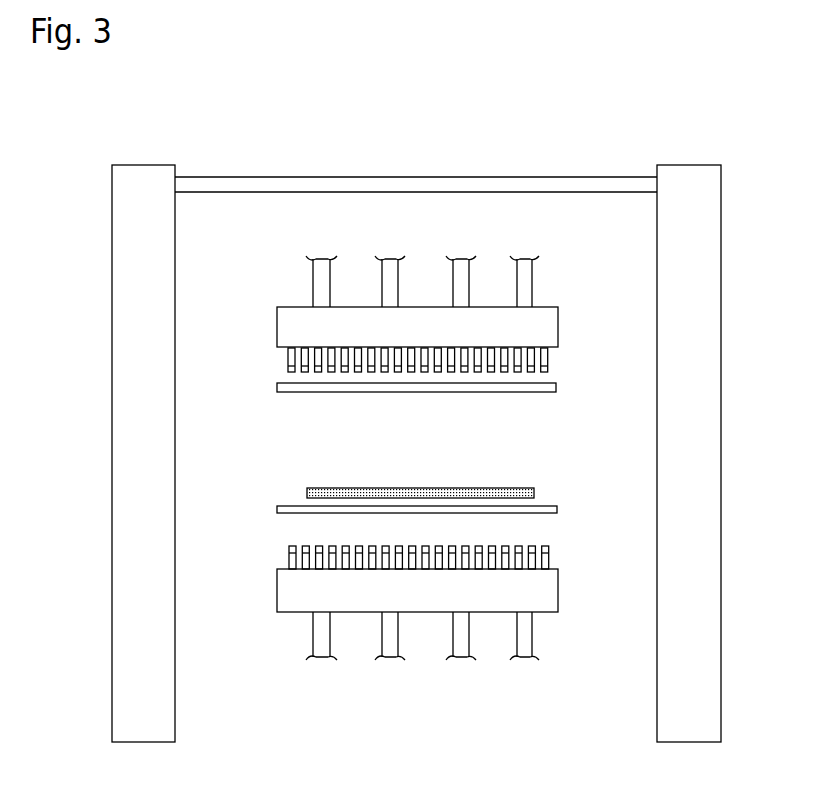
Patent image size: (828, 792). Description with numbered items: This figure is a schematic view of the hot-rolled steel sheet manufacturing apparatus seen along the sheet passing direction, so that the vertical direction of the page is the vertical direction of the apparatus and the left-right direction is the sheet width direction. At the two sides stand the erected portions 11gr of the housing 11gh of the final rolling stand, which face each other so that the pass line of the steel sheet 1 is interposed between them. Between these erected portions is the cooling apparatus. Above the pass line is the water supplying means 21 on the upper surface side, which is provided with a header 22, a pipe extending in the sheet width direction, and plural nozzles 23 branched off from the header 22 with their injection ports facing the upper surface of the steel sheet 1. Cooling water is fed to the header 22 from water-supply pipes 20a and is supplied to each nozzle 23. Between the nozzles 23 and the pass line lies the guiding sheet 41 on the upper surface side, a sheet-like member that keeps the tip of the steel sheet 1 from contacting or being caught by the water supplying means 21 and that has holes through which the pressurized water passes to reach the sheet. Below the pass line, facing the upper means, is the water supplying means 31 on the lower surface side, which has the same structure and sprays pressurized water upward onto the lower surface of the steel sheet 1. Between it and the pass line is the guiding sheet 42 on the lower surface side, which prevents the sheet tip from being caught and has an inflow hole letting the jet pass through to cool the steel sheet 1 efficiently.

The housing 11gh is at (592, 138).
The erected portions 11gr is at (127, 308).
The water-supply pipe 20a is at (338, 278).
The water supplying means 21 is at (454, 320).
The header 22 is at (552, 325).
The nozzle 23 is at (322, 372).
The guiding sheet 41 is at (503, 392).
The steel sheet 1 is at (502, 487).
The guiding sheet 42 is at (546, 505).
The water supplying means 31 is at (574, 567).